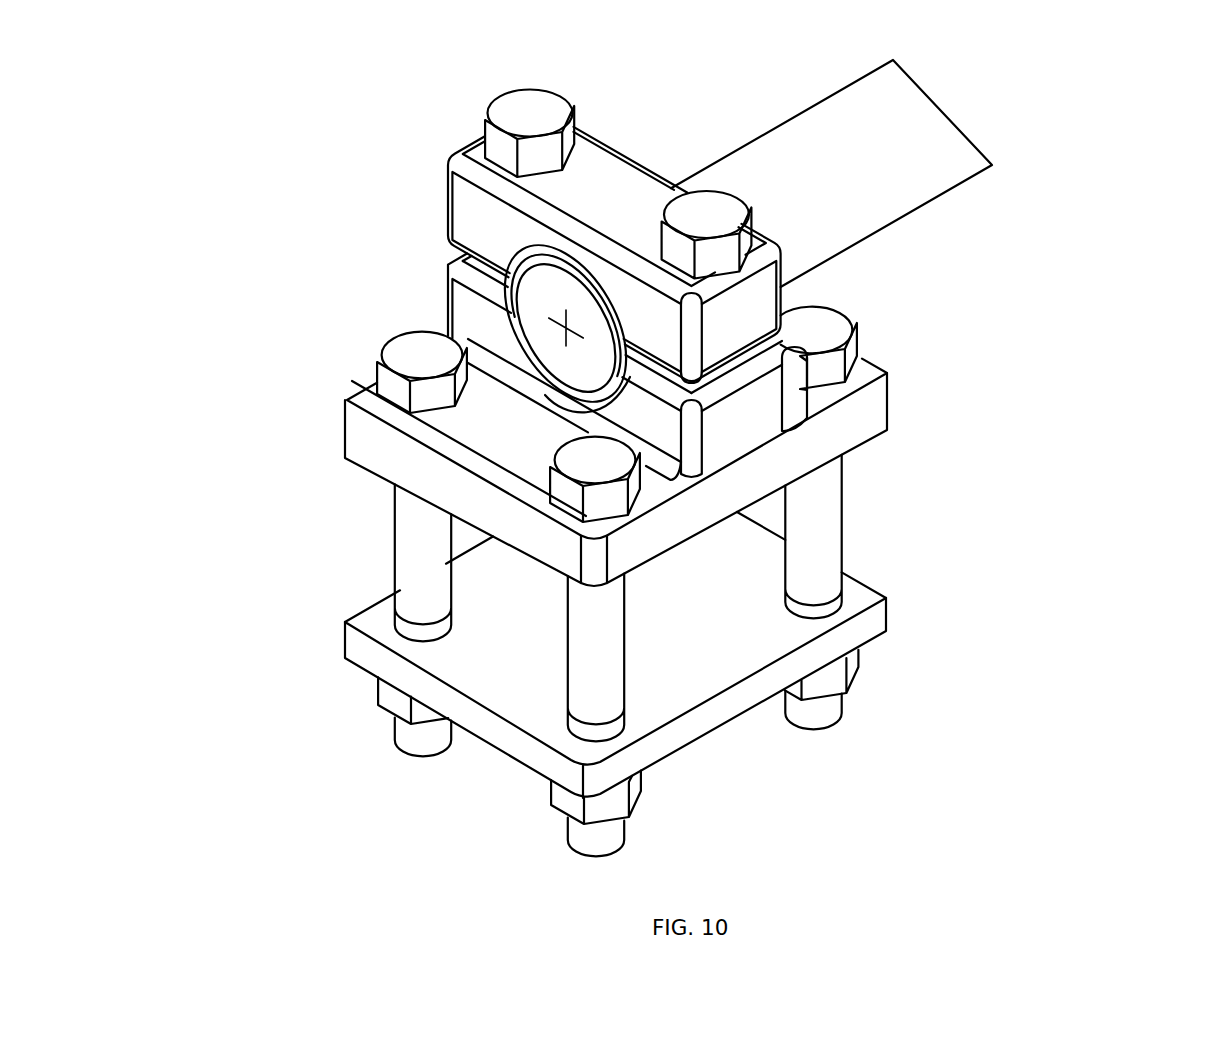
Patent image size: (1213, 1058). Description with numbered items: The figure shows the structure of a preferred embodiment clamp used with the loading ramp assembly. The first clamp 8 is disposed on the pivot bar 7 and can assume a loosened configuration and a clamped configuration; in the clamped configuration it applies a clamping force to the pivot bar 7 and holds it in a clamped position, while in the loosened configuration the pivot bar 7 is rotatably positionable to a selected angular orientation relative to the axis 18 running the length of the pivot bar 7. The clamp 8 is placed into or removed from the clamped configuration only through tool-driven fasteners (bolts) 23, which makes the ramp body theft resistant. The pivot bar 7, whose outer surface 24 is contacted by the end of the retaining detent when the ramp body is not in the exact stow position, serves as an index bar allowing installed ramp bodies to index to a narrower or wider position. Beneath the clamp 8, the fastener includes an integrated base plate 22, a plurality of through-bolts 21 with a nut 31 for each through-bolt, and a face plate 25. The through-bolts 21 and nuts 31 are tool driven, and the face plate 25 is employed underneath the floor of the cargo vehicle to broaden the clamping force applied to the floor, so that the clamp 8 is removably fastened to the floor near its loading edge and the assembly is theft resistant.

The pivot bar 7 is at (507, 274).
The first clamp 8 is at (492, 157).
The axis 18 is at (561, 327).
The through-bolts 21 is at (828, 728).
The integrated base plate 22 is at (345, 427).
The tool-driven fasteners (bolts) 23 is at (510, 93).
The outer surface 24 is at (708, 158).
The face plate 25 is at (891, 585).
The nut 31 is at (631, 815).